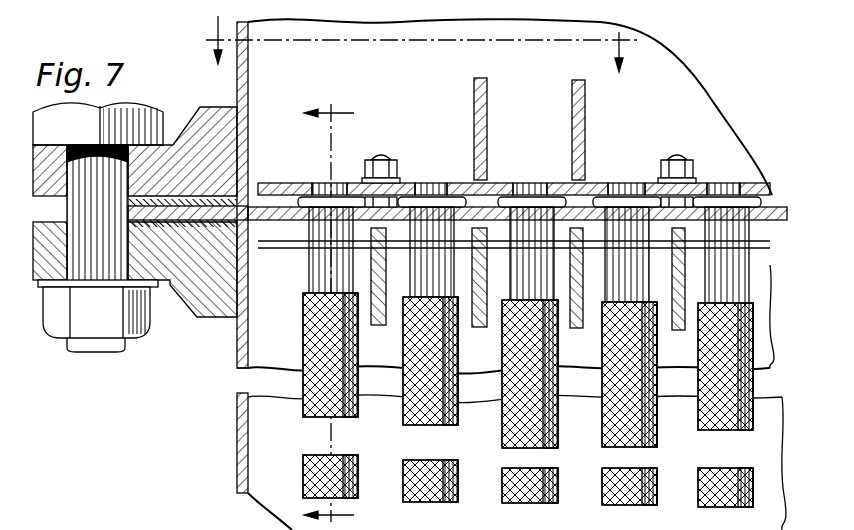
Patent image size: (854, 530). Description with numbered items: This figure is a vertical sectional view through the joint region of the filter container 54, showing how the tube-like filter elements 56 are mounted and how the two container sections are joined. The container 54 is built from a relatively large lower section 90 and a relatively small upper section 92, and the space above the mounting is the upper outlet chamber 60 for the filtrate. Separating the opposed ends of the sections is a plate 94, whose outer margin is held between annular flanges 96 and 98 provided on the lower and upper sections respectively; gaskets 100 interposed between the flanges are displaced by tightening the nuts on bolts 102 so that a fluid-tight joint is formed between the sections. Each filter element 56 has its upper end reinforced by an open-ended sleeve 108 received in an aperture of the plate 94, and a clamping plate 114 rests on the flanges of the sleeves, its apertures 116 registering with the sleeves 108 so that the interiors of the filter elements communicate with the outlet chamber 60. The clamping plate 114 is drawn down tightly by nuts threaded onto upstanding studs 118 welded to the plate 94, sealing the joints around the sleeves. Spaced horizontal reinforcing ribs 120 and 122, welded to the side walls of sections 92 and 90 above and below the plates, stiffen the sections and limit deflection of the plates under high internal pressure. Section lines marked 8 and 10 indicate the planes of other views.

The section line 8- 8 is at (329, 307).
The section line 10- 10 is at (419, 44).
The container 54 is at (236, 360).
The filter elements 56 is at (403, 496).
The outlet chamber 60 is at (722, 103).
The lower section 90 is at (238, 447).
The upper section 92 is at (249, 90).
The plate 94 is at (278, 222).
The annular flange 96 is at (192, 127).
The annular flange 98 is at (216, 312).
The gaskets 100 is at (128, 221).
The bolts 102 is at (100, 350).
The sleeve 108 is at (327, 213).
The clamping plate 114 is at (598, 186).
The apertures 116 is at (432, 185).
The studs 118 is at (383, 152).
The reinforcing ribs 120 is at (572, 104).
The reinforcing ribs 122 is at (378, 326).